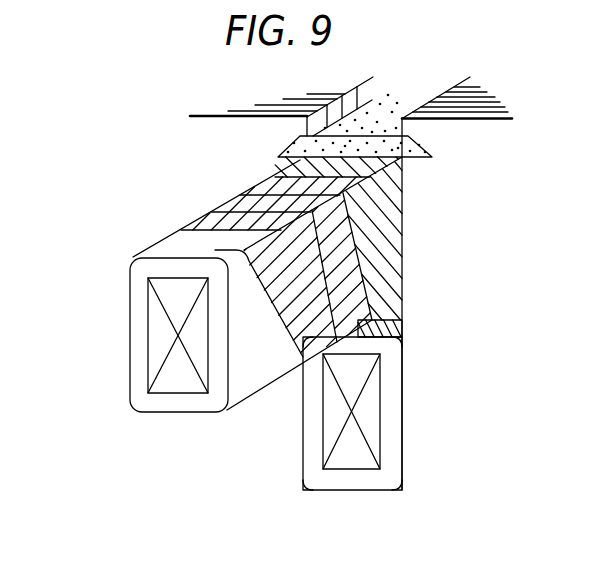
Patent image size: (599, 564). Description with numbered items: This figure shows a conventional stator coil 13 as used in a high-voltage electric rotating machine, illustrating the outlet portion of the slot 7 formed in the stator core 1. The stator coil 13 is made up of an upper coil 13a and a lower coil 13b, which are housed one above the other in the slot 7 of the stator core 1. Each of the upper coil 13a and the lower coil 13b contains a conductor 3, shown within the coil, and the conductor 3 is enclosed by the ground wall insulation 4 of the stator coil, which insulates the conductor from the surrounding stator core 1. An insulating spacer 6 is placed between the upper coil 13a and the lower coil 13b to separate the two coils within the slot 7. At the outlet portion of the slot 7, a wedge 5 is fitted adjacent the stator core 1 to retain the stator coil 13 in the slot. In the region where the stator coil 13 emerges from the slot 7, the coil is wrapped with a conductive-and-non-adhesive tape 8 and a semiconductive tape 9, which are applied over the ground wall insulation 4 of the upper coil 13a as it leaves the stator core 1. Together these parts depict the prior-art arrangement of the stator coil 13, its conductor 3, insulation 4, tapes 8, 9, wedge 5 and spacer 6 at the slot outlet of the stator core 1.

The stator core 1 is at (263, 135).
The conductor 3 is at (153, 322).
The ground wall insulation 4 is at (130, 268).
The wedge 5 is at (420, 147).
The insulating spacer 6 is at (403, 322).
The slot 7 is at (402, 485).
The conductive-and-non-adhesive tape 8 is at (233, 208).
The semiconductive tape 9 is at (387, 265).
The stator coil 13 is at (242, 377).
The upper coil 13a is at (133, 334).
The lower coil 13b is at (328, 417).